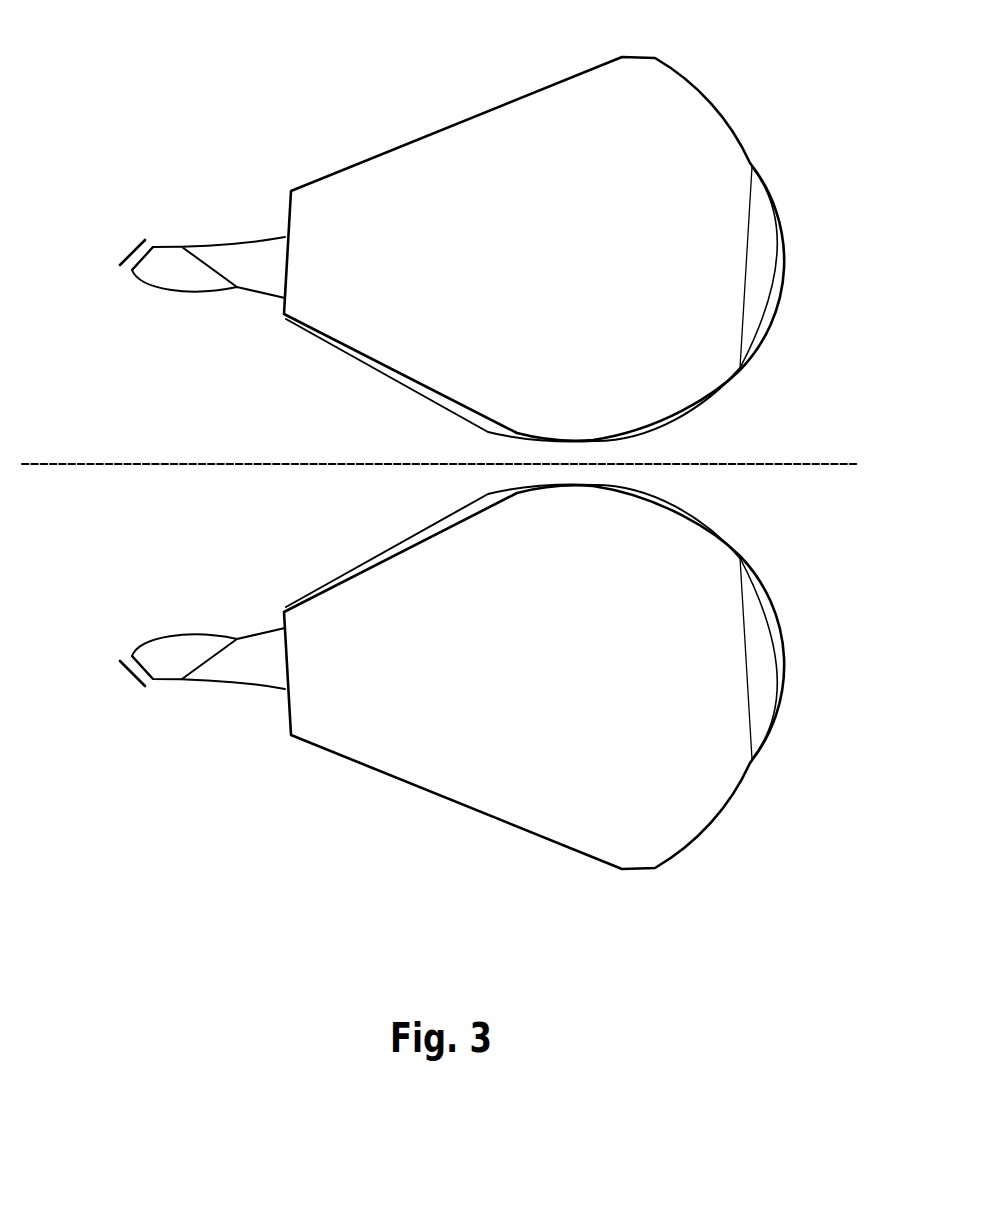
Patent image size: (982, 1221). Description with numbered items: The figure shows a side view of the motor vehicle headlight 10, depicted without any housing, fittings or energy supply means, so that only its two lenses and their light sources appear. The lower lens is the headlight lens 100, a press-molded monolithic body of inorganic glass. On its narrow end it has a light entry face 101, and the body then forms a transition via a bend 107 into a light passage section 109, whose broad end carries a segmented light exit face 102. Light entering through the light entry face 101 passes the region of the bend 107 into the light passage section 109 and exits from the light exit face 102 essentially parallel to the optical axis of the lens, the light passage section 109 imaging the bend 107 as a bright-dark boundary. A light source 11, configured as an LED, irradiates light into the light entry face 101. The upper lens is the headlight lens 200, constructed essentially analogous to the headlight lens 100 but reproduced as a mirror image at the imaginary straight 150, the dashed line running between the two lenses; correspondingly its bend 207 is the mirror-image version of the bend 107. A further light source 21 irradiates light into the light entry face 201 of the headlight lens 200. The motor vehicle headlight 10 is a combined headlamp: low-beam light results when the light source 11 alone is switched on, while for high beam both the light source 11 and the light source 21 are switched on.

The motor vehicle headlight 10 is at (172, 735).
The light source 11 is at (121, 667).
The further light source 21 is at (120, 260).
The headlight lens 100 is at (472, 727).
The light entry face 101 is at (131, 660).
The light exit face 102 is at (793, 675).
The bend 107 is at (283, 690).
The light passage section 109 is at (417, 769).
The imaginary straight 150 is at (820, 463).
The headlight lens 200 is at (419, 225).
The light entry face 201 is at (132, 272).
The bend 207 is at (283, 236).